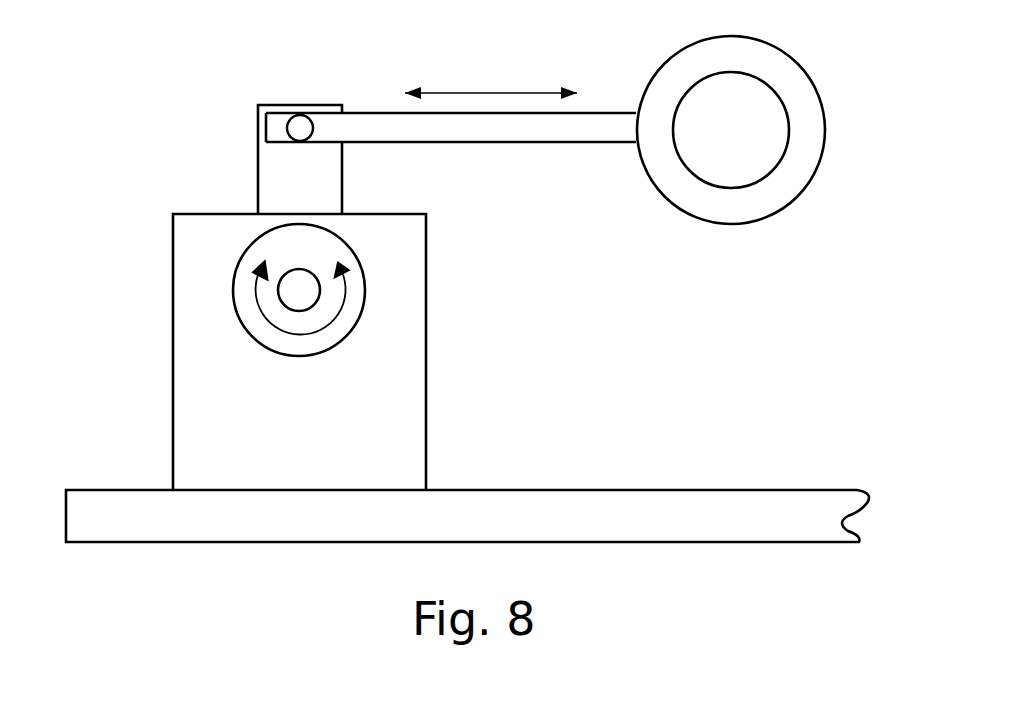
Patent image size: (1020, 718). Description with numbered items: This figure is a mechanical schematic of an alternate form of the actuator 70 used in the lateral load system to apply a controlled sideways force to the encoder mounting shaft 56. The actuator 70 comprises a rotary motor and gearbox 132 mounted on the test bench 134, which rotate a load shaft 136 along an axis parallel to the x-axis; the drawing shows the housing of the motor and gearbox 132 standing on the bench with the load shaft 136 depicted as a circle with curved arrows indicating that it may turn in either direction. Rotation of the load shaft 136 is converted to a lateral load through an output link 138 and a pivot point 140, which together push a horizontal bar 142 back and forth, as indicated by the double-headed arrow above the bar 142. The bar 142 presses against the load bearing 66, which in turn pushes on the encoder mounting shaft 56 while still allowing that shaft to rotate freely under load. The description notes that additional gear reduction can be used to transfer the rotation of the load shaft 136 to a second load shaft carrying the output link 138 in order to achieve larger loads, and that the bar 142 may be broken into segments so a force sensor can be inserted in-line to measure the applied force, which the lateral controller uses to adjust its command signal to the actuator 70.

The actuator 70 is at (197, 78).
The encoder mounting shaft 56 is at (732, 130).
The load bearing 66 is at (697, 45).
The rotary motor and gearbox 132 is at (427, 367).
The test bench 134 is at (758, 490).
The load shaft 136 is at (285, 268).
The output link 138 is at (342, 173).
The pivot point 140 is at (299, 125).
The bar 142 is at (535, 130).